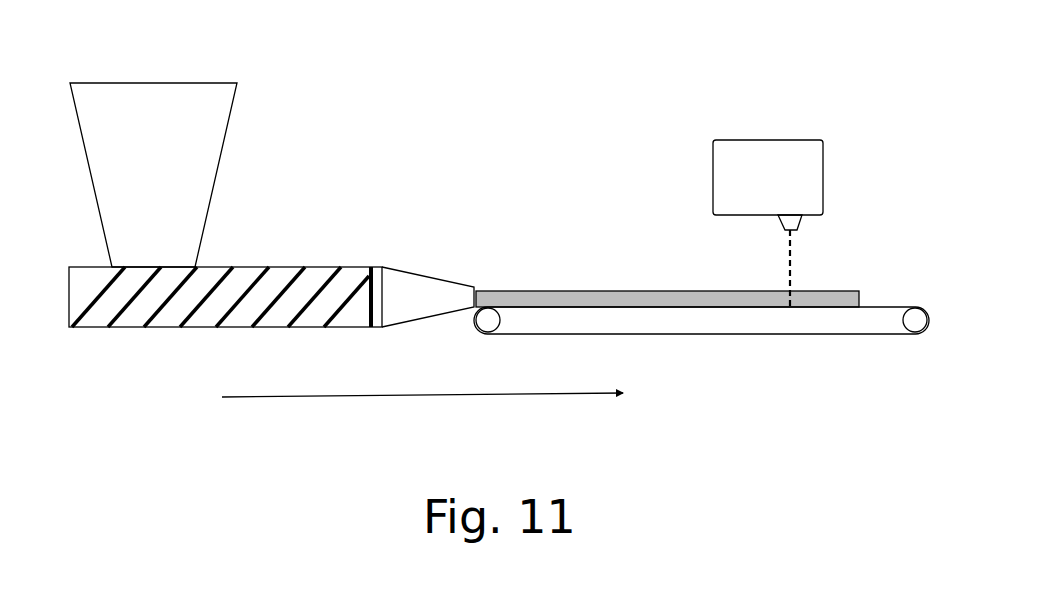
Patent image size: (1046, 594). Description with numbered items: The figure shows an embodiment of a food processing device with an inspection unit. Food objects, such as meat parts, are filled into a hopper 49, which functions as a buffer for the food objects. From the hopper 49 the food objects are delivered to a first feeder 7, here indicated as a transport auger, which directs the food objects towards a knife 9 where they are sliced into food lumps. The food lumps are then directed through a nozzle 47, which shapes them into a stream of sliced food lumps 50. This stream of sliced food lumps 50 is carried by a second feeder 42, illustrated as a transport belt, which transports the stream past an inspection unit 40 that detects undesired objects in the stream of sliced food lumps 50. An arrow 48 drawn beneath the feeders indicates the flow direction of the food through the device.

The hopper 49 is at (139, 174).
The first feeder 7 is at (227, 284).
The knife 9 is at (371, 265).
The nozzle 47 is at (406, 297).
The stream of sliced food lumps 50 is at (595, 290).
The second feeder 42 is at (755, 336).
The inspection unit 40 is at (756, 186).
The arrow 48 is at (422, 385).